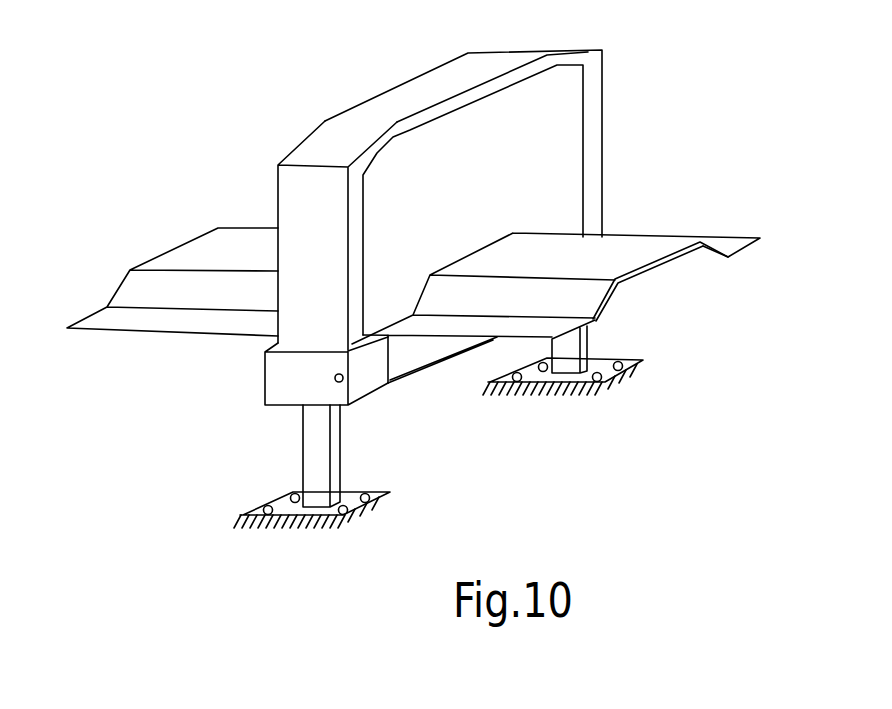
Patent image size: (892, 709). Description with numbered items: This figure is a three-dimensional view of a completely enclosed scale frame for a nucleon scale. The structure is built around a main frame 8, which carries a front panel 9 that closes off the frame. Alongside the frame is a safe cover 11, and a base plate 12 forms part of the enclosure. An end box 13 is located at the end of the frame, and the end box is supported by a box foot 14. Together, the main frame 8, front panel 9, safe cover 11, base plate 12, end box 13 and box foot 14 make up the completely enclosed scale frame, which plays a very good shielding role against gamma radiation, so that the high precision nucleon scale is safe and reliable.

The main frame 8 is at (590, 122).
The front panel 9 is at (535, 170).
The safe cover 11 is at (627, 255).
The base plate 12 is at (423, 355).
The end box 13 is at (282, 380).
The box foot 14 is at (317, 435).